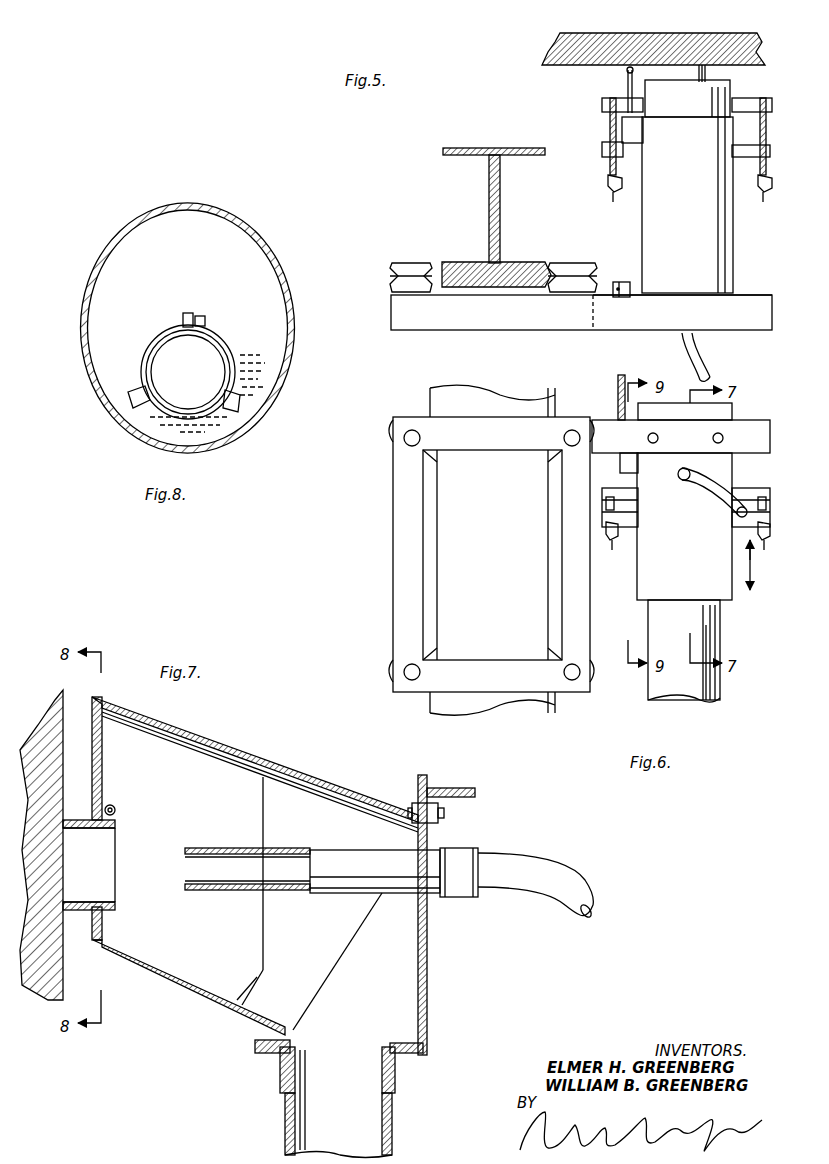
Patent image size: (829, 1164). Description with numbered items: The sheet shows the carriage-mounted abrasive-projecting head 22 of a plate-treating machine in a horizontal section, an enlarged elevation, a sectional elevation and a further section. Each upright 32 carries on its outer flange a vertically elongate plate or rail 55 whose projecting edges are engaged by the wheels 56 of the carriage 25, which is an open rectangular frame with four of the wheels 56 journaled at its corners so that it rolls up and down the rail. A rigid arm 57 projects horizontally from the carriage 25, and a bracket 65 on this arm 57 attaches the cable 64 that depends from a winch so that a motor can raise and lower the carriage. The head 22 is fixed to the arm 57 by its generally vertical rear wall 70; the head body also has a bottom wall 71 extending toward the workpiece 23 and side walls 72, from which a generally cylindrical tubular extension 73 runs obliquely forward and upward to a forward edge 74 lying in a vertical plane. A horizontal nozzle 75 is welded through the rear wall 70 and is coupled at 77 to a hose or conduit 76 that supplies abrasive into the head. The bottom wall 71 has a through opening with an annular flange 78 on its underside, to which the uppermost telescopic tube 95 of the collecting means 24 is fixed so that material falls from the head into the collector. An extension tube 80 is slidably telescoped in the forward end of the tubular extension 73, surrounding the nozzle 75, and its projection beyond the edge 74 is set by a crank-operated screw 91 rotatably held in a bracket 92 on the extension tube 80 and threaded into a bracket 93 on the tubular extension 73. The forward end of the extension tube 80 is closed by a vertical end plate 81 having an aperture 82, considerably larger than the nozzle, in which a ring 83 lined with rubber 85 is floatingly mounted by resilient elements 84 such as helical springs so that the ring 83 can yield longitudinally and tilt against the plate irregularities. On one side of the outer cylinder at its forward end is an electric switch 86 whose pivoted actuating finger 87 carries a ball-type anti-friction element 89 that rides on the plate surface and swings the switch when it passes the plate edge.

In FIG. 5, the abrasive-projecting head 22 is at (737, 218).
In FIG. 6, the abrasive-projecting head 22 is at (737, 592).
In FIG. 7, the abrasive-projecting head 22 is at (352, 797).
In FIG. 5, the workpiece 23 is at (562, 65).
In FIG. 7, the workpiece 23 is at (46, 990).
In FIG. 7, the collecting means 24 is at (396, 1120).
In FIG. 5, the carriage 25 is at (500, 330).
In FIG. 6, the carriage 25 is at (390, 596).
In FIG. 5, the upright 32 is at (500, 222).
In FIG. 5, the rail 55 is at (463, 281).
In FIG. 6, the rail 55 is at (527, 393).
In FIG. 5, the wheels 56 is at (392, 268).
In FIG. 6, the wheels 56 is at (391, 430).
In FIG. 5, the carriage arm 57 is at (745, 300).
In FIG. 6, the carriage arm 57 is at (765, 412).
In FIG. 7, the carriage arm 57 is at (470, 788).
In FIG. 5, the cable 64 is at (618, 293).
In FIG. 6, the cable 64 is at (617, 400).
In FIG. 5, the bracket 65 is at (616, 282).
In FIG. 7, the rear wall 70 is at (428, 958).
In FIG. 7, the bottom wall 71 is at (400, 1043).
In FIG. 7, the side walls 72 is at (408, 1000).
In FIG. 7, the tubular extension 73 is at (300, 786).
In FIG. 7, the forward edge 74 is at (153, 713).
In FIG. 7, the nozzle 75 is at (333, 879).
In FIG. 7, the conduit 76 is at (567, 872).
In FIG. 7, the coupling 77 is at (466, 852).
In FIG. 7, the annular flange 78 is at (396, 1072).
In FIG. 8, the extension tube 80 is at (263, 413).
In FIG. 7, the extension tube 80 is at (135, 965).
In FIG. 8, the end plate 81 is at (103, 355).
In FIG. 7, the end plate 81 is at (91, 743).
In FIG. 8, the aperture 82 is at (168, 350).
In FIG. 7, the aperture 82 is at (89, 865).
In FIG. 5, the ring 83 is at (708, 70).
In FIG. 8, the ring 83 is at (215, 341).
In FIG. 7, the ring 83 is at (98, 906).
In FIG. 8, the resilient elements 84 is at (186, 313).
In FIG. 7, the resilient elements 84 is at (116, 810).
In FIG. 8, the lining 85 is at (157, 383).
In FIG. 7, the lining 85 is at (110, 895).
In FIG. 5, the electric switch 86 is at (622, 130).
In FIG. 6, the electric switch 86 is at (630, 467).
In FIG. 5, the actuating finger 87 is at (602, 104).
In FIG. 5, the anti-friction element 89 is at (626, 72).
In FIG. 5, the crank-operated screw 91 is at (610, 163).
In FIG. 6, the crank-operated screw 91 is at (606, 504).
In FIG. 5, the bracket 92 is at (772, 106).
In FIG. 6, the bracket 92 is at (637, 502).
In FIG. 5, the bracket 93 is at (772, 150).
In FIG. 6, the bracket 93 is at (625, 530).
In FIG. 6, the uppermost telescopic tube 95 is at (713, 685).
In FIG. 7, the uppermost telescopic tube 95 is at (285, 1108).